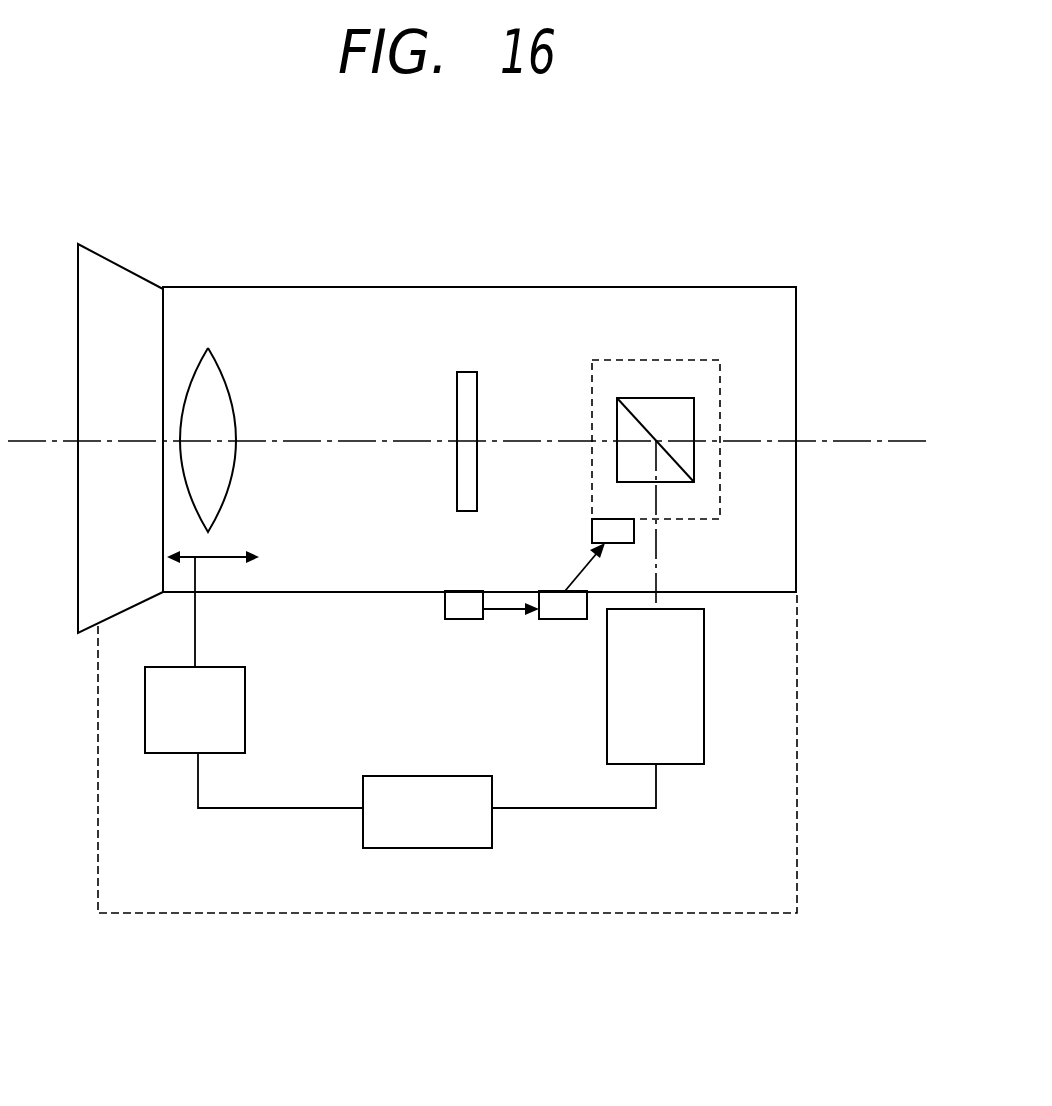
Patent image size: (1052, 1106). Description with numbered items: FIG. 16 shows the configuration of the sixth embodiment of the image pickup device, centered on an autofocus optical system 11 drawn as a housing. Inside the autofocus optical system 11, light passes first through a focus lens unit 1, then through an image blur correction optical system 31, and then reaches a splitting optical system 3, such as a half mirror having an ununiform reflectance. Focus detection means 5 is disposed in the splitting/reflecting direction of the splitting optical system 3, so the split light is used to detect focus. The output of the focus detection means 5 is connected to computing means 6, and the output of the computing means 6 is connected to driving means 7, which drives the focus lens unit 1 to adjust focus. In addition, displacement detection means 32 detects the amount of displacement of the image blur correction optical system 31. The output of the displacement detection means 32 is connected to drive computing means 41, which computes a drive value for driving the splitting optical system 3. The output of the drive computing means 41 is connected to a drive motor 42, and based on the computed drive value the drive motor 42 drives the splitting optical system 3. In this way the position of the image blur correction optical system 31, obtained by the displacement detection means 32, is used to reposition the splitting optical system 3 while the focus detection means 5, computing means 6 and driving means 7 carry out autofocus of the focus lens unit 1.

The focus lens unit 1 is at (215, 390).
The splitting optical system 3 is at (660, 413).
The focus detection means 5 is at (690, 697).
The computing means 6 is at (425, 785).
The driving means 7 is at (232, 707).
The autofocus optical system 11 is at (381, 287).
The image blur correction optical system 31 is at (467, 407).
The displacement detection means 32 is at (465, 613).
The drive computing means 41 is at (563, 613).
The drive motor 42 is at (598, 531).